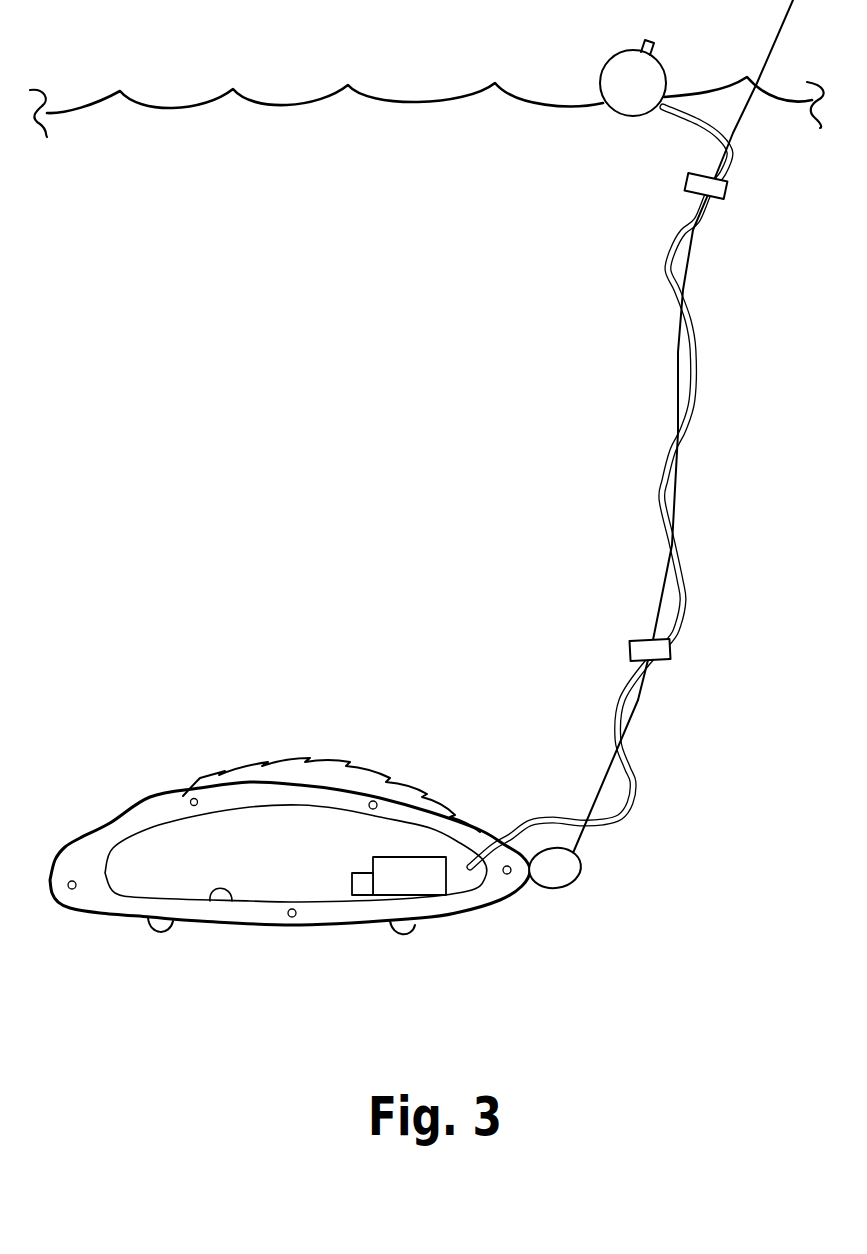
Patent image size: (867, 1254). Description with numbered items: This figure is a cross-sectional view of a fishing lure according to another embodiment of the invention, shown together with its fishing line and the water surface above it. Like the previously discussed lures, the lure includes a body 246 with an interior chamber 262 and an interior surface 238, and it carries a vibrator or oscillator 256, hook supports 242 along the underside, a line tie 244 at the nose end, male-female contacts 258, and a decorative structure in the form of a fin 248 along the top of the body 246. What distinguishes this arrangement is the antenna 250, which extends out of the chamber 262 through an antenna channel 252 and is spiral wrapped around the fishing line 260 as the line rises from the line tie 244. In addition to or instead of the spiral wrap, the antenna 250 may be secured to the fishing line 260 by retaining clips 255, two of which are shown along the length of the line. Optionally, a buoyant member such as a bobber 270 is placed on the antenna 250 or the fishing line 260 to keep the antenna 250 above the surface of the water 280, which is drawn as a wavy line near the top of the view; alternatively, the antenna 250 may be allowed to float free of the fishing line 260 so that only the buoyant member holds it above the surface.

The interior surface 238 is at (230, 897).
The hook supports 242 is at (158, 931).
The line tie 244 is at (556, 888).
The body 246 is at (108, 835).
The fin 248 is at (298, 760).
The antenna 250 is at (663, 450).
The antenna channel 252 is at (480, 843).
The retaining clips 255 is at (730, 192).
The vibrator or oscillator 256 is at (457, 890).
The male-female contacts 258 is at (190, 803).
The fishing line 260 is at (678, 352).
The interior chamber 262 is at (268, 866).
The bobber 270 is at (607, 66).
The surface of the water 280 is at (362, 102).